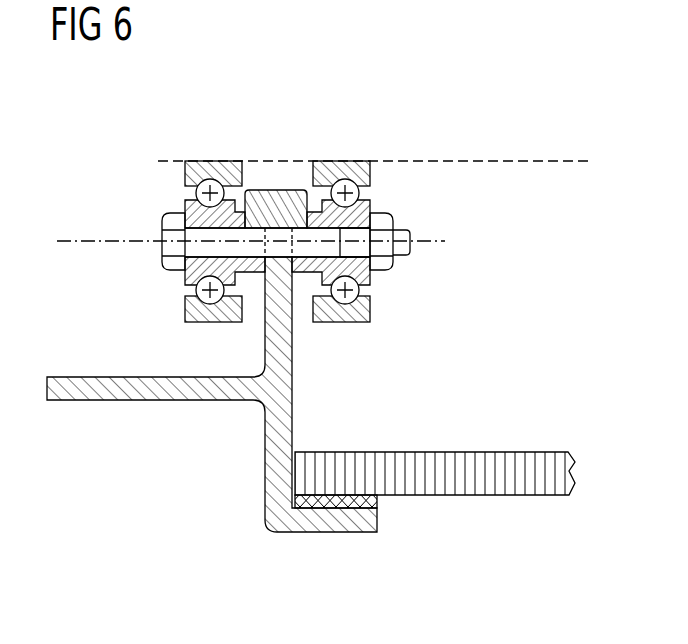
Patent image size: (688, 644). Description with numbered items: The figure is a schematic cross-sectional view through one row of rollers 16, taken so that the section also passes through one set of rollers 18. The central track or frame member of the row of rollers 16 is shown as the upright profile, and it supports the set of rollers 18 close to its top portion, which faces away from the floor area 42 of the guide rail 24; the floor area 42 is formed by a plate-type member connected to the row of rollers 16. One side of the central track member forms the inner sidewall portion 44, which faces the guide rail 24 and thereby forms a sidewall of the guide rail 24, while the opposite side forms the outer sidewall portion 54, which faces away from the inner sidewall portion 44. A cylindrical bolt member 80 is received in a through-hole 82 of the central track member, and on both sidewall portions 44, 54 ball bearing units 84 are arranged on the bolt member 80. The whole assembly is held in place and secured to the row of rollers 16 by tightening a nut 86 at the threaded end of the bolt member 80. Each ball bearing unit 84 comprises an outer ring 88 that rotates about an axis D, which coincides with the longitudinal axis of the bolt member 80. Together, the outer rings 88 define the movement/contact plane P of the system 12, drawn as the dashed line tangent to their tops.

The system 12 is at (476, 83).
The rollers 18 is at (317, 119).
The outer ring 88 is at (210, 166).
The through-hole 82 is at (272, 192).
The ball bearing units 84 is at (160, 187).
The nut 86 is at (383, 264).
The cylindrical bolt member 80 is at (350, 322).
The outer sidewall portion 54 is at (263, 332).
The inner sidewall portion 44 is at (293, 360).
The row of rollers 16 is at (293, 410).
The guide rail 24 is at (515, 393).
The floor area 42 is at (493, 485).
The movement/contact plane P is at (571, 161).
The axis D is at (72, 241).